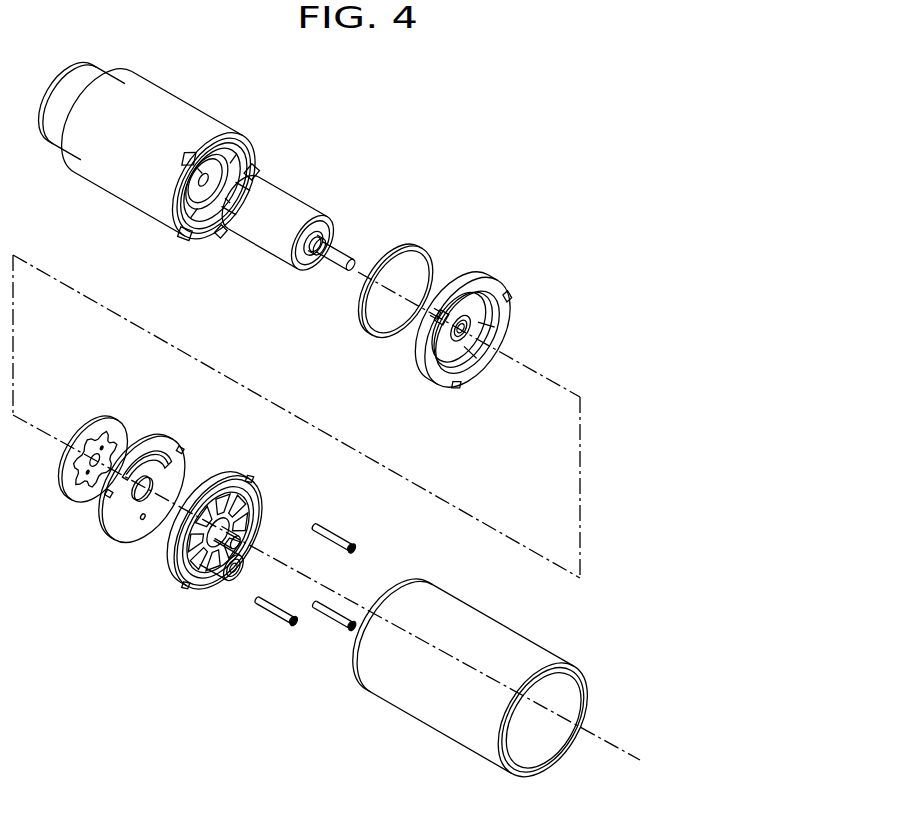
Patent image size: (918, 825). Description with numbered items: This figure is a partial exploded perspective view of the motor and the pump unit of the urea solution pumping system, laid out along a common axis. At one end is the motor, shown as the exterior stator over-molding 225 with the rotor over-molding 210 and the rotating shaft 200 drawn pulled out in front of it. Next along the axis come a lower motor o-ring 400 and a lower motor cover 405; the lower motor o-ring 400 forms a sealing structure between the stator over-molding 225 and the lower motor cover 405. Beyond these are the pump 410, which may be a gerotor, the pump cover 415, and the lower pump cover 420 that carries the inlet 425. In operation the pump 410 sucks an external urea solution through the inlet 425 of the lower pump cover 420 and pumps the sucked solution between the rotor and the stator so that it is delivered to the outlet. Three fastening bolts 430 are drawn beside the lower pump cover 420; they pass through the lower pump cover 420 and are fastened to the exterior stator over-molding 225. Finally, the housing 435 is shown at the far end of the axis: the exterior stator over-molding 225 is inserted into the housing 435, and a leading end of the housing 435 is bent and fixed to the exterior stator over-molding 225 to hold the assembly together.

The exterior stator over-molding 225 is at (182, 118).
The rotor over-molding 210 is at (280, 208).
The rotating shaft 200 is at (341, 253).
The lower motor o-ring 400 is at (416, 250).
The lower motor cover 405 is at (460, 278).
The pump 410 is at (114, 420).
The pump cover 415 is at (178, 478).
The lower pump cover 420 is at (258, 519).
The inlet 425 is at (243, 578).
The fastening bolts 430 is at (336, 530).
The housing 435 is at (500, 650).